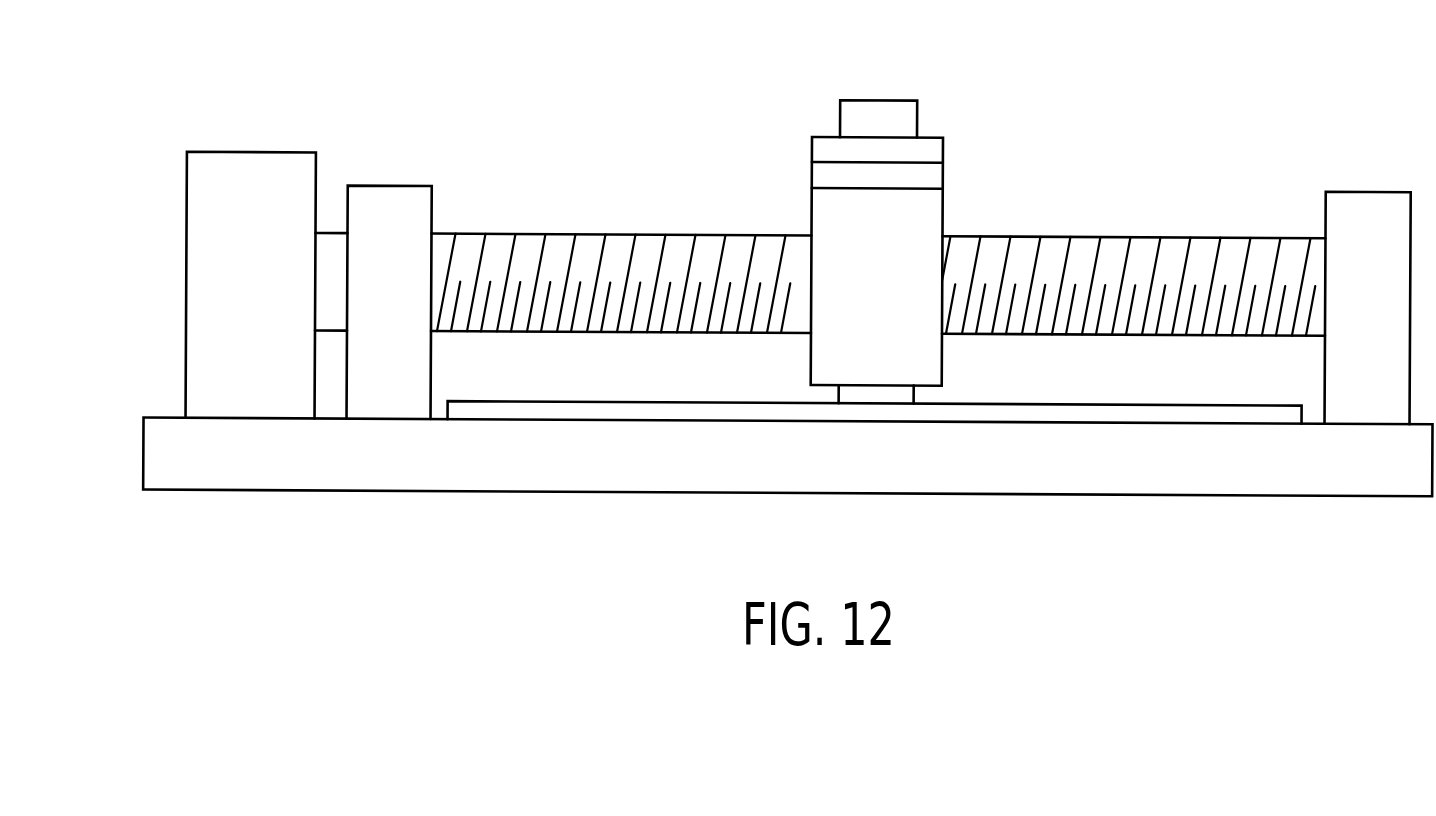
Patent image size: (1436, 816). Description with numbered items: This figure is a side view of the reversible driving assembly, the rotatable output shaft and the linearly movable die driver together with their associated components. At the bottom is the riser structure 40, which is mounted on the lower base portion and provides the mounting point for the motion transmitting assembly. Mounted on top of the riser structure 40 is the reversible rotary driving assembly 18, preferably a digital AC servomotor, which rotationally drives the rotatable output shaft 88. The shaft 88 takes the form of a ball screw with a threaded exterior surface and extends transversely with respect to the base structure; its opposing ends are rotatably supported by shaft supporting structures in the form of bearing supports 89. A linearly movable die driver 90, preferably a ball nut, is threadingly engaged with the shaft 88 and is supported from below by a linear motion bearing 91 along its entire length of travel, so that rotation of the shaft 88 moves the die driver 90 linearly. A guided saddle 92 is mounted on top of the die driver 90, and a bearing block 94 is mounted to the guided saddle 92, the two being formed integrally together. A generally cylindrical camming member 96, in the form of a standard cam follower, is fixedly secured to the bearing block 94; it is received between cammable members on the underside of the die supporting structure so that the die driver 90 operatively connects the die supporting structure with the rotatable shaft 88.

The reversible rotary driving assembly 18 is at (281, 183).
The bearing supports 89 is at (402, 197).
The rotatable output shaft 88 is at (1172, 246).
The linearly movable die driver 90 is at (917, 212).
The guided saddle 92 is at (930, 172).
The bearing block 94 is at (933, 142).
The camming member 96 is at (890, 110).
The linear motion bearing 91 is at (977, 414).
The riser structure 40 is at (1162, 475).